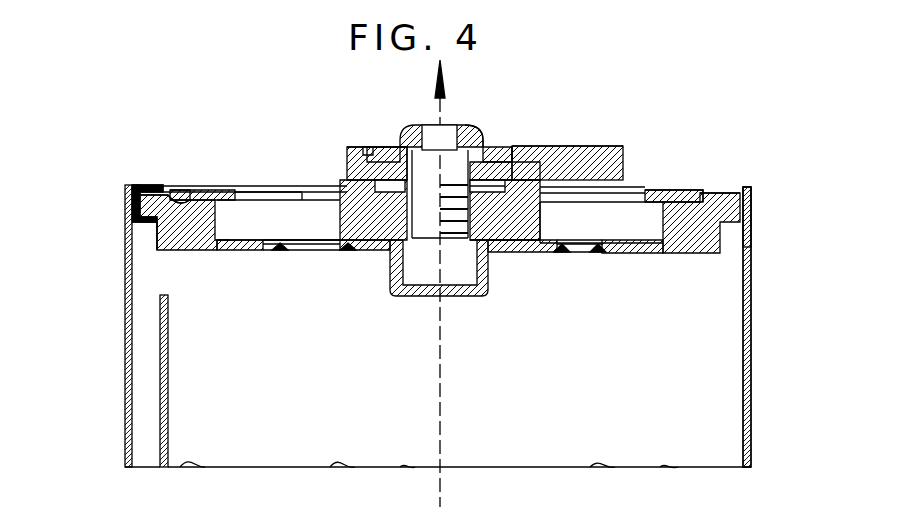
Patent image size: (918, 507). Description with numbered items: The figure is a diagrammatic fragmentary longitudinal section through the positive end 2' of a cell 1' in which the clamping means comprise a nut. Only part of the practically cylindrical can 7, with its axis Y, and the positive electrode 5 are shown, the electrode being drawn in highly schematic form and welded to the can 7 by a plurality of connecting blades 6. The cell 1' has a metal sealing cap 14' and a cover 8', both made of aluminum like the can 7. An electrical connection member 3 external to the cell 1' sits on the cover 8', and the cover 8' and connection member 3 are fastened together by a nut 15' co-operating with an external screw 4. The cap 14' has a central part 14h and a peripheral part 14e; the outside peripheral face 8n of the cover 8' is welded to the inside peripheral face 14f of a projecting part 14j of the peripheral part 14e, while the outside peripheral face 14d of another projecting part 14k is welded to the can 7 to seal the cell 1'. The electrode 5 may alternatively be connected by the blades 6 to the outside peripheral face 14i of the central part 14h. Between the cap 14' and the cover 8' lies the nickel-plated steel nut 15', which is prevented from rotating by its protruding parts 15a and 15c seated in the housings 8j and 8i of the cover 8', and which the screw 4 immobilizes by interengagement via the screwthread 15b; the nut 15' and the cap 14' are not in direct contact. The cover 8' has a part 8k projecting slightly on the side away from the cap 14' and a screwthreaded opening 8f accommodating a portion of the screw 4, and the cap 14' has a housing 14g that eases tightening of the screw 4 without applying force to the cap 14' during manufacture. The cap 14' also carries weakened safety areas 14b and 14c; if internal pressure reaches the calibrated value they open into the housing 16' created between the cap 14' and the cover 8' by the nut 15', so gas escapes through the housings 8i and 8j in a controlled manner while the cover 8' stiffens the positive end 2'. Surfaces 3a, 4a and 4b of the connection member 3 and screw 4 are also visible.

The cell 1' is at (501, 326).
The positive end 2' is at (782, 165).
The electrical connection member 3 is at (606, 143).
The arm bore 3a is at (512, 146).
The screw 4 is at (398, 120).
The screw head 4a is at (477, 124).
The screw head flange 4b is at (494, 146).
The positive electrode 5 is at (170, 398).
The connecting blades 6 is at (147, 258).
The can 7 is at (753, 262).
The cover 8' is at (421, 148).
The screwthreaded opening 8f is at (535, 212).
The housing 8i is at (245, 192).
The housing 8j is at (638, 192).
The projecting part of cover 8k is at (388, 147).
The outside peripheral face of cover 8n is at (201, 186).
The sealing cap 14' is at (436, 244).
The weakened safety area 14b is at (315, 243).
The weakened safety area 14c is at (548, 222).
The outside peripheral face 14d is at (125, 193).
The peripheral part of cap 14e is at (170, 225).
The inside peripheral face 14f is at (183, 186).
The housing of cap 14g is at (450, 268).
The central part of cap 14h is at (355, 252).
The outside peripheral face of central part 14i is at (157, 252).
The projecting part of cap 14j is at (143, 193).
The projecting part of cap 14k is at (135, 185).
The nut 15' is at (494, 258).
The protruding part of nut 15a is at (550, 146).
The screwthread 15b is at (512, 252).
The protruding part of nut 15c is at (339, 185).
The housing 16' is at (486, 209).
The axis Y is at (437, 118).